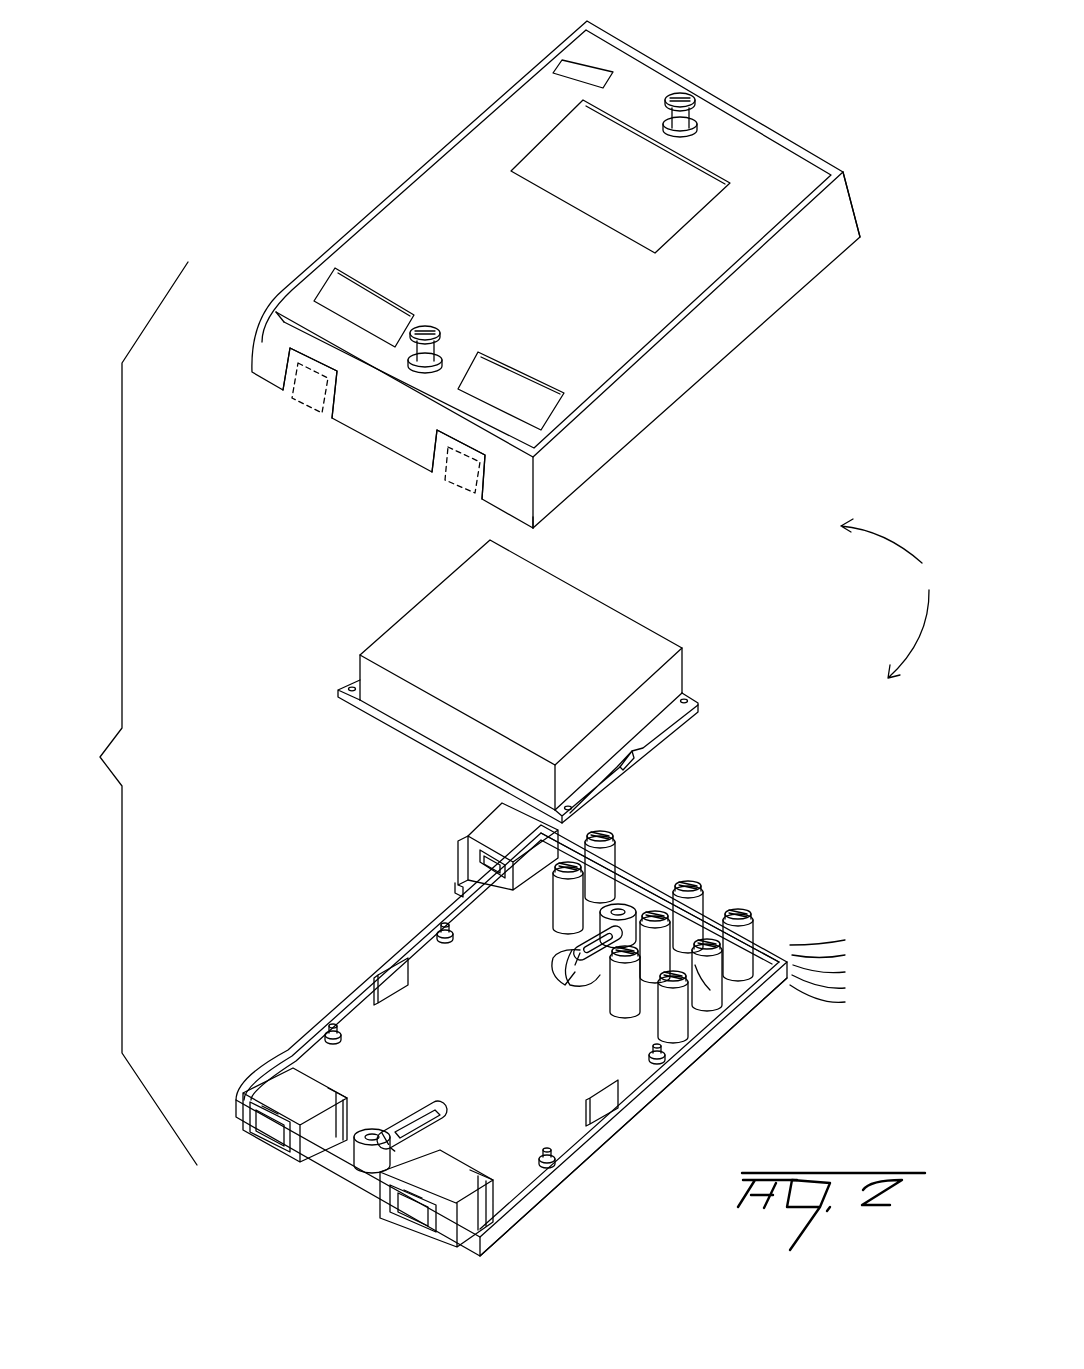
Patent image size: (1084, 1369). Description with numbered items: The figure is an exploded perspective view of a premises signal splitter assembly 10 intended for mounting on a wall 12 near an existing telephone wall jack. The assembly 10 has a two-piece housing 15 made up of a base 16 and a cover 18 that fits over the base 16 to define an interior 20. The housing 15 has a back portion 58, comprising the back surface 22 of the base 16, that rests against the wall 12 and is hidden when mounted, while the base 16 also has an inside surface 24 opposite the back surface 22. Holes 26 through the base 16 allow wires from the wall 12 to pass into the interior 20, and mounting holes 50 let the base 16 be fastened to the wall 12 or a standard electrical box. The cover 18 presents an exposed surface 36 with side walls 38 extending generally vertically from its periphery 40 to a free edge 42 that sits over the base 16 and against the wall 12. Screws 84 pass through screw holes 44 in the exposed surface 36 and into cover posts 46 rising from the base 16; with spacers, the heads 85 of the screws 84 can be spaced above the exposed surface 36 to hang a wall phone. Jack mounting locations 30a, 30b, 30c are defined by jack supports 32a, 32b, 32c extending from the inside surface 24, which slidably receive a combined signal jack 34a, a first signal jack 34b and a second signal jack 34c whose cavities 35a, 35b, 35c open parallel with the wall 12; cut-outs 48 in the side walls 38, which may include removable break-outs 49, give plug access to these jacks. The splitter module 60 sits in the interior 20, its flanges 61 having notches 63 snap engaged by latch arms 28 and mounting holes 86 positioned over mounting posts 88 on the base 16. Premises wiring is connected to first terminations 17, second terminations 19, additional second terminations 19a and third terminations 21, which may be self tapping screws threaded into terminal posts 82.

The assembly 10 is at (123, 713).
The wall 12 is at (810, 940).
The housing 15 is at (906, 598).
The base 16 is at (525, 1031).
The first terminations 17 is at (548, 877).
The cover 18 is at (583, 283).
The second terminations 19 is at (657, 916).
The additional second terminations 19a is at (737, 915).
The interior 20 is at (432, 978).
The third terminations 21 is at (650, 983).
The back surface 22 is at (637, 1078).
The back portion 58 is at (660, 897).
The inside surface 24 is at (572, 1127).
The holes 26 is at (427, 1118).
The latch arms 28 is at (398, 975).
The jack mounting location 30a is at (471, 864).
The jack mounting location 30b is at (266, 1095).
The jack mounting location 30c is at (438, 1203).
The jack support 32a is at (458, 870).
The jack support 32b is at (330, 1096).
The jack support 32c is at (492, 1196).
The combined signal jack 34a is at (522, 868).
The first signal jack 34b is at (273, 1078).
The second signal jack 34c is at (445, 1222).
The cavity 35a is at (478, 822).
The cavity 35b is at (272, 1138).
The cavity 35c is at (400, 1227).
The exposed surface 36 is at (840, 148).
The side walls 38 is at (634, 420).
The periphery 40 is at (566, 428).
The free edge 42 is at (560, 519).
The screw holes 44 is at (697, 124).
The cover posts 46 is at (625, 905).
The cut-outs 48 is at (298, 383).
The break-outs 49 is at (320, 413).
The mounting holes 50 is at (593, 957).
The splitter module 60 is at (538, 685).
The flanges 61 is at (345, 695).
The notches 63 is at (637, 760).
The terminal posts 82 is at (567, 920).
The screws 84 is at (730, 87).
The heads 85 is at (680, 92).
The mounting holes 86 is at (352, 684).
The mounting posts 88 is at (450, 942).